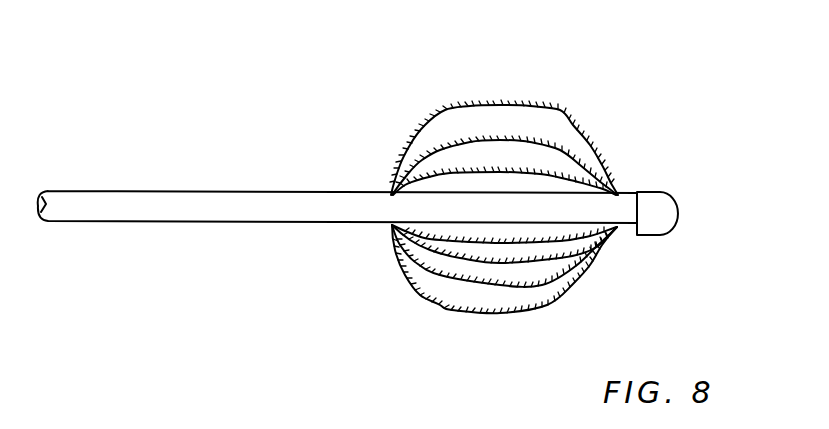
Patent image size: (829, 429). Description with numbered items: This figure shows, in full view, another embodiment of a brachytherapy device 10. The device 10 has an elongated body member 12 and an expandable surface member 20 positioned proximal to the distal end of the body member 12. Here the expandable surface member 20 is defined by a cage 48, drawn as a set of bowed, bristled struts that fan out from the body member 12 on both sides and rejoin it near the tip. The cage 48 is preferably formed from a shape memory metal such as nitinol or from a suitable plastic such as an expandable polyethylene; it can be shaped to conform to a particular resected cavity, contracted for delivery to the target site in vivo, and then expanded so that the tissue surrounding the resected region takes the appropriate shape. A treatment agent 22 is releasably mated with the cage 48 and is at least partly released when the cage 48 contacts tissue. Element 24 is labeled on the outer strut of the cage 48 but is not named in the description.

The medical device 10 is at (123, 105).
The shaft 12 is at (250, 192).
The expandable basket 20 is at (425, 133).
The outer arm 22 is at (565, 96).
The middle arm 24 is at (510, 122).
The inner arm 48 is at (557, 177).